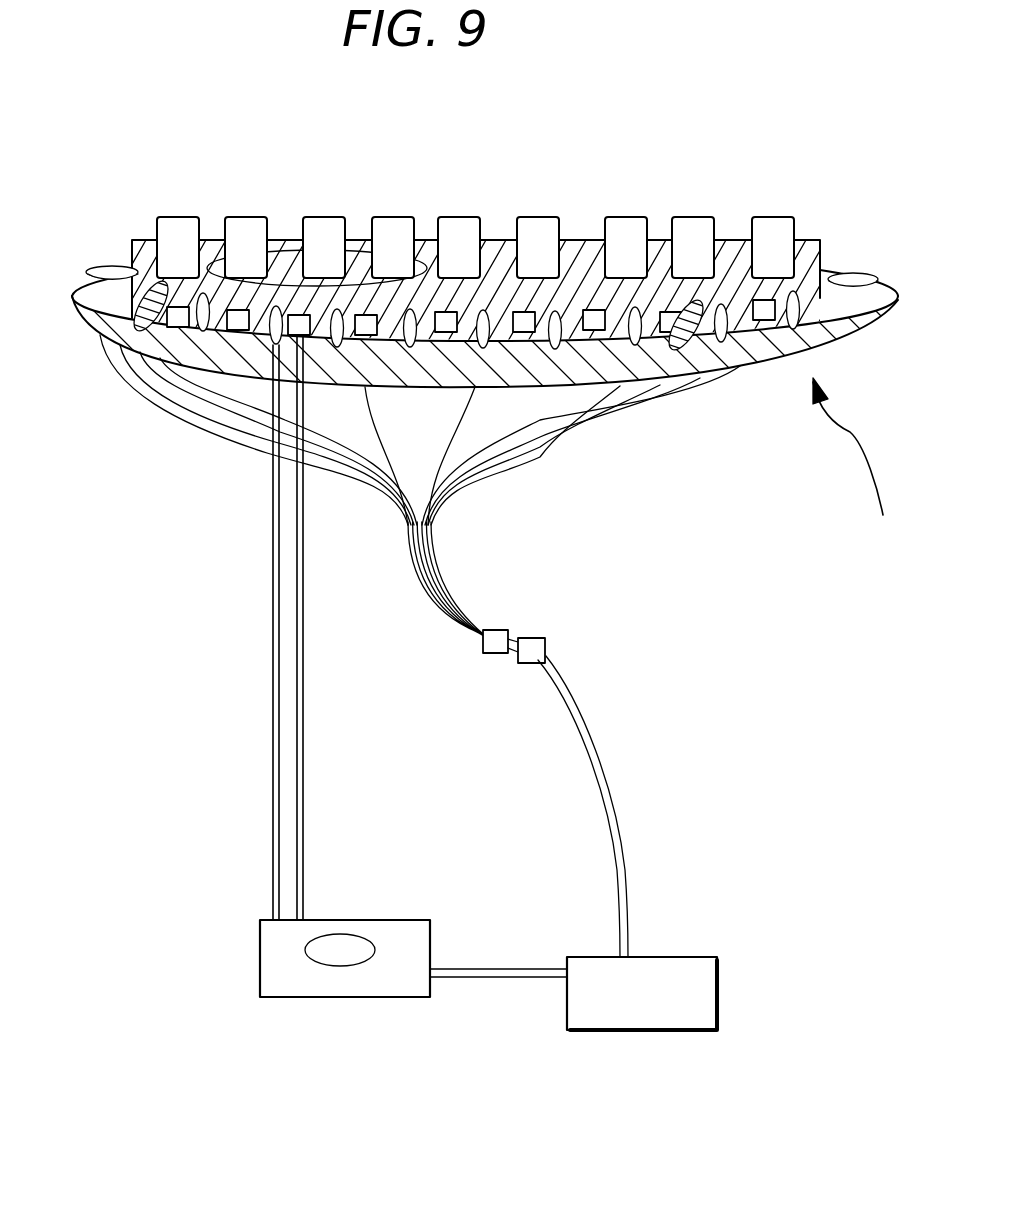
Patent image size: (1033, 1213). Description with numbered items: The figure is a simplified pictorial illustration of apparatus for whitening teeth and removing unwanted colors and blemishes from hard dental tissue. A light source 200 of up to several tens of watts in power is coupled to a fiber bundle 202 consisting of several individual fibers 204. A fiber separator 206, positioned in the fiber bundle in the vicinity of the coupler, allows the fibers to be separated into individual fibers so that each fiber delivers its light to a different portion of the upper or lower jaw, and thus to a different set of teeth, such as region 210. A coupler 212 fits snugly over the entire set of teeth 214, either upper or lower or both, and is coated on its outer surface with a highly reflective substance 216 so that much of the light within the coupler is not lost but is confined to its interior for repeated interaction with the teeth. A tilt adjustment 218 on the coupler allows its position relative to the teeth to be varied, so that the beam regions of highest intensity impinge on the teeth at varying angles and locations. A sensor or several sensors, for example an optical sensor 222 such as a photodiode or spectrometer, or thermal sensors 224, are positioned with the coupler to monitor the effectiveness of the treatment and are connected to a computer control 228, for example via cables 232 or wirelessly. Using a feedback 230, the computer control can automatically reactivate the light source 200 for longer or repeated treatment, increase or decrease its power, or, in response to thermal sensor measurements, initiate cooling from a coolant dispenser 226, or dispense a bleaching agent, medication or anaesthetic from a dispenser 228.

The light source 200 is at (673, 957).
The fiber bundle 202 is at (605, 762).
The individual fibers 204 is at (200, 395).
The fiber separator 206 is at (498, 640).
The region 210 is at (277, 240).
The coupler 212 is at (855, 472).
The set of teeth 214 is at (233, 217).
The highly reflective substance 216 is at (755, 160).
The tilt adjustment 218 is at (544, 640).
The optical sensor 222 is at (346, 337).
The thermal sensors 224 is at (790, 292).
The coolant dispenser 226 is at (110, 265).
The computer control 228 is at (136, 285).
The feedback 230 is at (474, 968).
The cables 232 is at (276, 600).